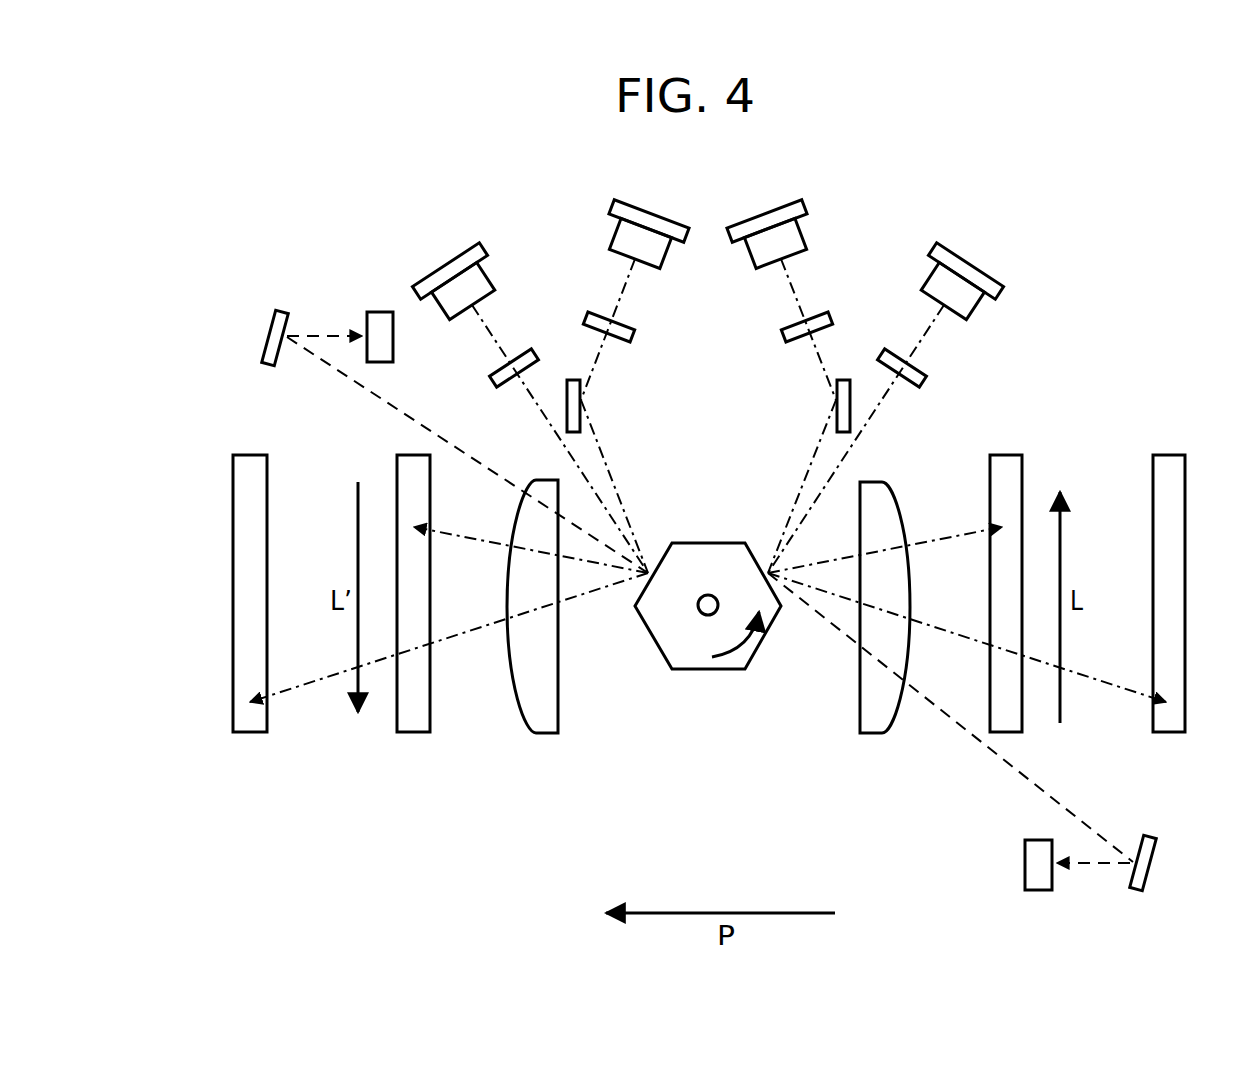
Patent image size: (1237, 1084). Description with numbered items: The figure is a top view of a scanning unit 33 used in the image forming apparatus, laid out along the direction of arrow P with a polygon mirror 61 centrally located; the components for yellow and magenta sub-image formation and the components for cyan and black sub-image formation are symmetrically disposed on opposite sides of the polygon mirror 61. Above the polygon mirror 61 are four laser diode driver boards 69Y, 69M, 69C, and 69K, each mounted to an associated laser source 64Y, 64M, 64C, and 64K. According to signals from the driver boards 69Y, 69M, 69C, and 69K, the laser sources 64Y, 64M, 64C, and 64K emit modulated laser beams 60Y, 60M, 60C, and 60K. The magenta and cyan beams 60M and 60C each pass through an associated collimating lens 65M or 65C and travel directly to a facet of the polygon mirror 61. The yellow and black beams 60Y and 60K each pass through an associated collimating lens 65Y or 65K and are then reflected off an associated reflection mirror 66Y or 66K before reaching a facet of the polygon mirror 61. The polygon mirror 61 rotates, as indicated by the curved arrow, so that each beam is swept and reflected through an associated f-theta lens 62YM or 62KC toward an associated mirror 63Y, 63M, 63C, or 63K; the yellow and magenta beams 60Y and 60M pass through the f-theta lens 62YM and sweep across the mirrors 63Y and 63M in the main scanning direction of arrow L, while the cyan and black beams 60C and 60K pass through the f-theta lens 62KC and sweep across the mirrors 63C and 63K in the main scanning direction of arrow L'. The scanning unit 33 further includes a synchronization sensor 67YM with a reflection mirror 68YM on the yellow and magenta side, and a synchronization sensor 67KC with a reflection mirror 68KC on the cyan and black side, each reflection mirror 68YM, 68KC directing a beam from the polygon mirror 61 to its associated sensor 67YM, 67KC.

The scanning unit 33 is at (1116, 231).
The laser beam 60C is at (470, 541).
The laser beam 60K is at (470, 636).
The laser beam 60M is at (944, 541).
The laser beam 60Y is at (942, 636).
The polygon mirror 61 is at (705, 672).
The f-theta lens 62KC is at (543, 735).
The f-theta lens 62YM is at (873, 735).
The mirror 63K is at (250, 734).
The mirror 63C is at (412, 734).
The mirror 63M is at (1005, 734).
The mirror 63Y is at (1168, 734).
The laser source 64C is at (494, 280).
The laser source 64K is at (614, 235).
The laser source 64Y is at (806, 235).
The laser source 64M is at (926, 280).
The collimating lens 65C is at (516, 355).
The collimating lens 65K is at (626, 328).
The collimating lens 65Y is at (786, 328).
The collimating lens 65M is at (900, 355).
The reflection mirror 66K is at (562, 383).
The reflection mirror 66Y is at (856, 383).
The synchronization sensor 67KC is at (374, 310).
The synchronization sensor 67YM is at (1038, 892).
The reflection mirror 68KC is at (263, 330).
The reflection mirror 68YM is at (1135, 892).
The laser diode driver board 69C is at (437, 268).
The laser diode driver board 69K is at (678, 198).
The laser diode driver board 69Y is at (760, 214).
The laser diode driver board 69M is at (990, 245).